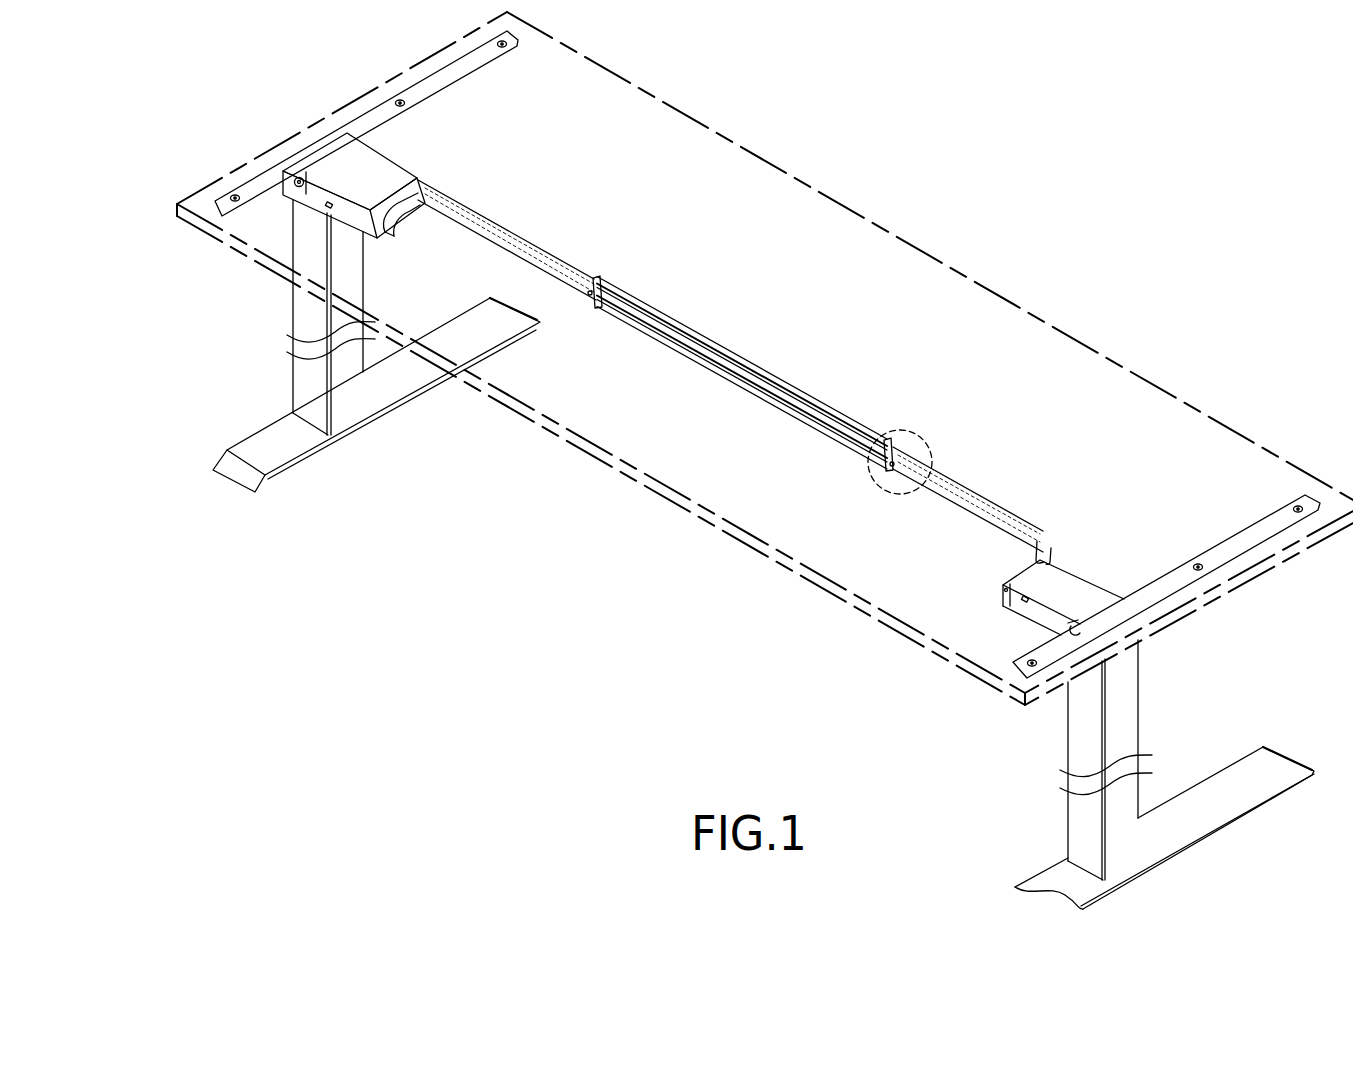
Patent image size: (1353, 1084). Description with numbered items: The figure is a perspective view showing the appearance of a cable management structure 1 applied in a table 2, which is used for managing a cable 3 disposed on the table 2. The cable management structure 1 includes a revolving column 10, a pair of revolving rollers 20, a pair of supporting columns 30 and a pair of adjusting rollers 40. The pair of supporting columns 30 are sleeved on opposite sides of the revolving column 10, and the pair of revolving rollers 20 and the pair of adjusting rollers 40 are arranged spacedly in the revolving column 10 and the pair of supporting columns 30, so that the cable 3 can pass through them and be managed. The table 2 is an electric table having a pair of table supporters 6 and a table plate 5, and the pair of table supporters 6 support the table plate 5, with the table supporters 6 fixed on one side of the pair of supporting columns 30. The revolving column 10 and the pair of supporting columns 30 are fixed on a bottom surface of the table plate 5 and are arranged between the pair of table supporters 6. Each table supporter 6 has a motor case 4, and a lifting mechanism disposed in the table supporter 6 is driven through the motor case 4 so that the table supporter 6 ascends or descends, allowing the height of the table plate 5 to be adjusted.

The cable management structure 1 is at (860, 375).
The table 2 is at (914, 92).
The cable 3 is at (426, 210).
The motor case 4 is at (337, 170).
The table plate 5 is at (670, 462).
The table supporter 6 is at (305, 378).
The revolving column 10 is at (703, 335).
The revolving roller 20 is at (508, 207).
The supporting column 30 is at (860, 375).
The adjusting roller 40 is at (883, 483).